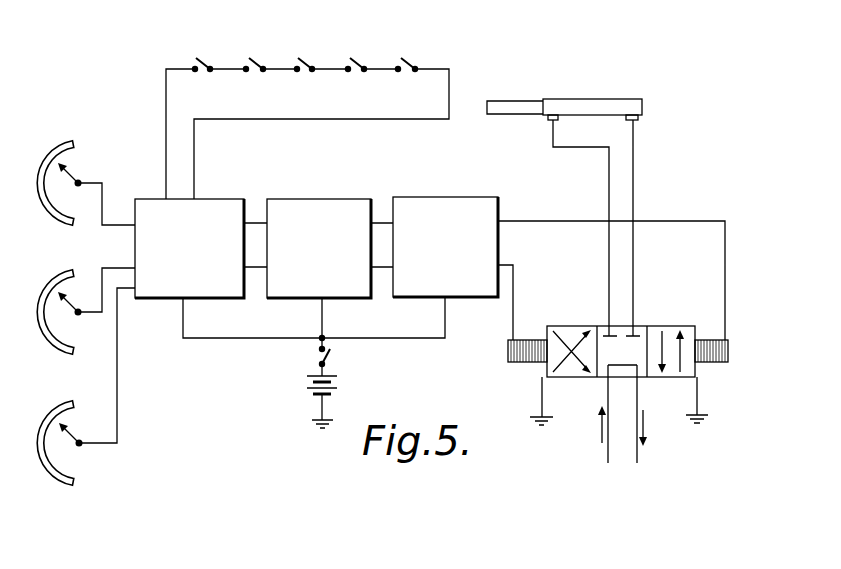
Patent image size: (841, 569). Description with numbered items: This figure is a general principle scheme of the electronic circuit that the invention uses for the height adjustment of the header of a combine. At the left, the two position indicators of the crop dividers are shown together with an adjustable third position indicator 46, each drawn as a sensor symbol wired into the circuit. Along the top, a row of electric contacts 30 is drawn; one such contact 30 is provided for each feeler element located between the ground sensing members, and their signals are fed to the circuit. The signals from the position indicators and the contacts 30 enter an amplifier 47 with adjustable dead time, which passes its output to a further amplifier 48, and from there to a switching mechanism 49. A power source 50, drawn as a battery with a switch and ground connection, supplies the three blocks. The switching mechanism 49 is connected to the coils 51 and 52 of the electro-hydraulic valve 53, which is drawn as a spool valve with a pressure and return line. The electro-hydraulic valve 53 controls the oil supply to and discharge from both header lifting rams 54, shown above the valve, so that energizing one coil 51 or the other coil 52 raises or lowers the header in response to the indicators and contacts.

The adjustable third position indicator 46 is at (66, 483).
The electric contacts of the feeler elements 30 is at (203, 62).
The amplifier with adjustable dead time 47 is at (219, 206).
The amplifier 48 is at (344, 205).
The switching mechanism 49 is at (461, 205).
The power source 50 is at (334, 381).
The coil 51 is at (523, 362).
The coil 52 is at (718, 362).
The electro-hydraulic valve 53 is at (654, 320).
The header lifting rams 54 is at (596, 107).